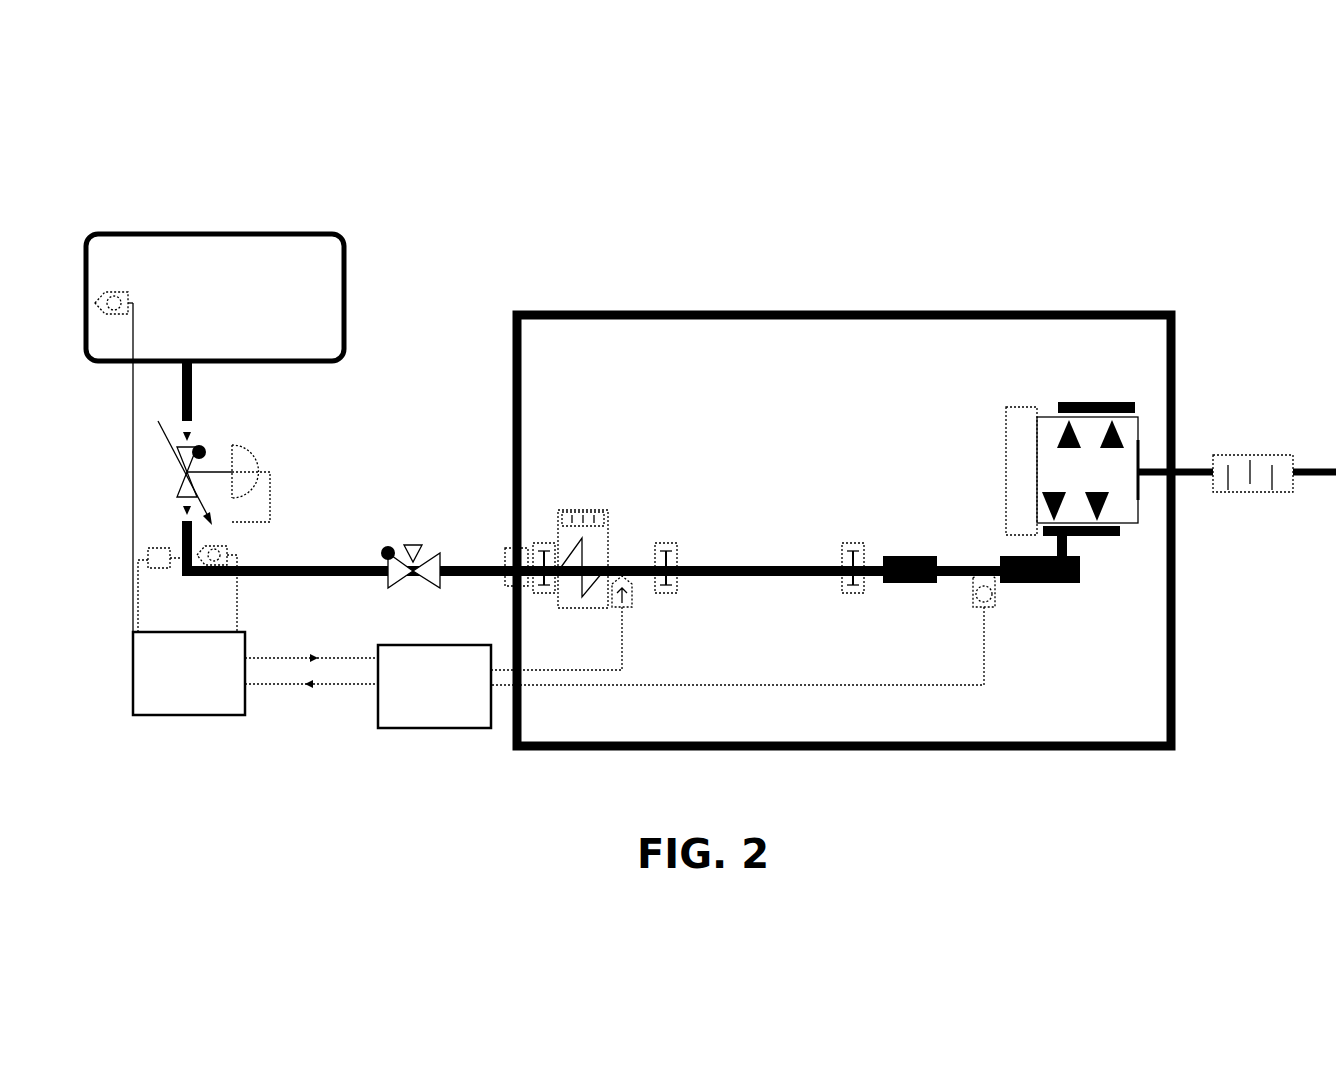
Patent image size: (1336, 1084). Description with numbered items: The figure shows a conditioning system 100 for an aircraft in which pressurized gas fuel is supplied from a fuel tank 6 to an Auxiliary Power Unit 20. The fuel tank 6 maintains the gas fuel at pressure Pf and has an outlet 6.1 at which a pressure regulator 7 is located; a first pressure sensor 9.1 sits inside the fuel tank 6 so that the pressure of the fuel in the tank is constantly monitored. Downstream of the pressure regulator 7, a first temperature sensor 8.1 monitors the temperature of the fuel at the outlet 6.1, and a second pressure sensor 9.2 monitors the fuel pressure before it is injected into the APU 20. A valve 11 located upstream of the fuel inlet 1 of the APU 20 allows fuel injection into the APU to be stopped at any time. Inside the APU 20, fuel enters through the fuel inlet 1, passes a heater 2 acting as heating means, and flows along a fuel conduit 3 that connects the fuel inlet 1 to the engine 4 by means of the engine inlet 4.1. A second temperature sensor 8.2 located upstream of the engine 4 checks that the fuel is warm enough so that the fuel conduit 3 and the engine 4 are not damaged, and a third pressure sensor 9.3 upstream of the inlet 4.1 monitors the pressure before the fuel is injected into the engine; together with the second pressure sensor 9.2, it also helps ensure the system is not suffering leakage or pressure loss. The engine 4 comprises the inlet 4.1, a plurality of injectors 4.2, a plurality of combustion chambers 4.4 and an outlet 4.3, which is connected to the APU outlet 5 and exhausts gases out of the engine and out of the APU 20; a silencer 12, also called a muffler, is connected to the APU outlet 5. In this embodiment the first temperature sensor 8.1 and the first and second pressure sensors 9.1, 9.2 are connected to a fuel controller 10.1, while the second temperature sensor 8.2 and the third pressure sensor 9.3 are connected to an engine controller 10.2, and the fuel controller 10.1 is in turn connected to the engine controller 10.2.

The conditioning system 100 is at (603, 218).
The fuel tank 6 is at (265, 281).
The first pressure sensor 9.1 is at (106, 296).
The outlet 6.1 is at (175, 366).
The pressure regulator 7 is at (188, 471).
The first temperature sensor 8.1 is at (150, 549).
The second pressure sensor 9.2 is at (228, 551).
The valve 11 is at (413, 560).
The Auxiliary Power Unit 20 is at (749, 301).
The fuel inlet 1 is at (508, 553).
The heater 2 is at (563, 572).
The second temperature sensor 8.2 is at (634, 597).
The fuel conduit 3 is at (740, 563).
The third pressure sensor 9.3 is at (995, 604).
The inlet 4.1 is at (1070, 543).
The engine 4 is at (1140, 418).
The combustion chambers 4.4 is at (1058, 467).
The injectors 4.2 is at (1097, 404).
The outlet 4.3 is at (1140, 466).
The APU outlet 5 is at (1176, 477).
The silencer 12 is at (1260, 462).
The fuel controller 10.1 is at (185, 704).
The engine controller 10.2 is at (428, 728).